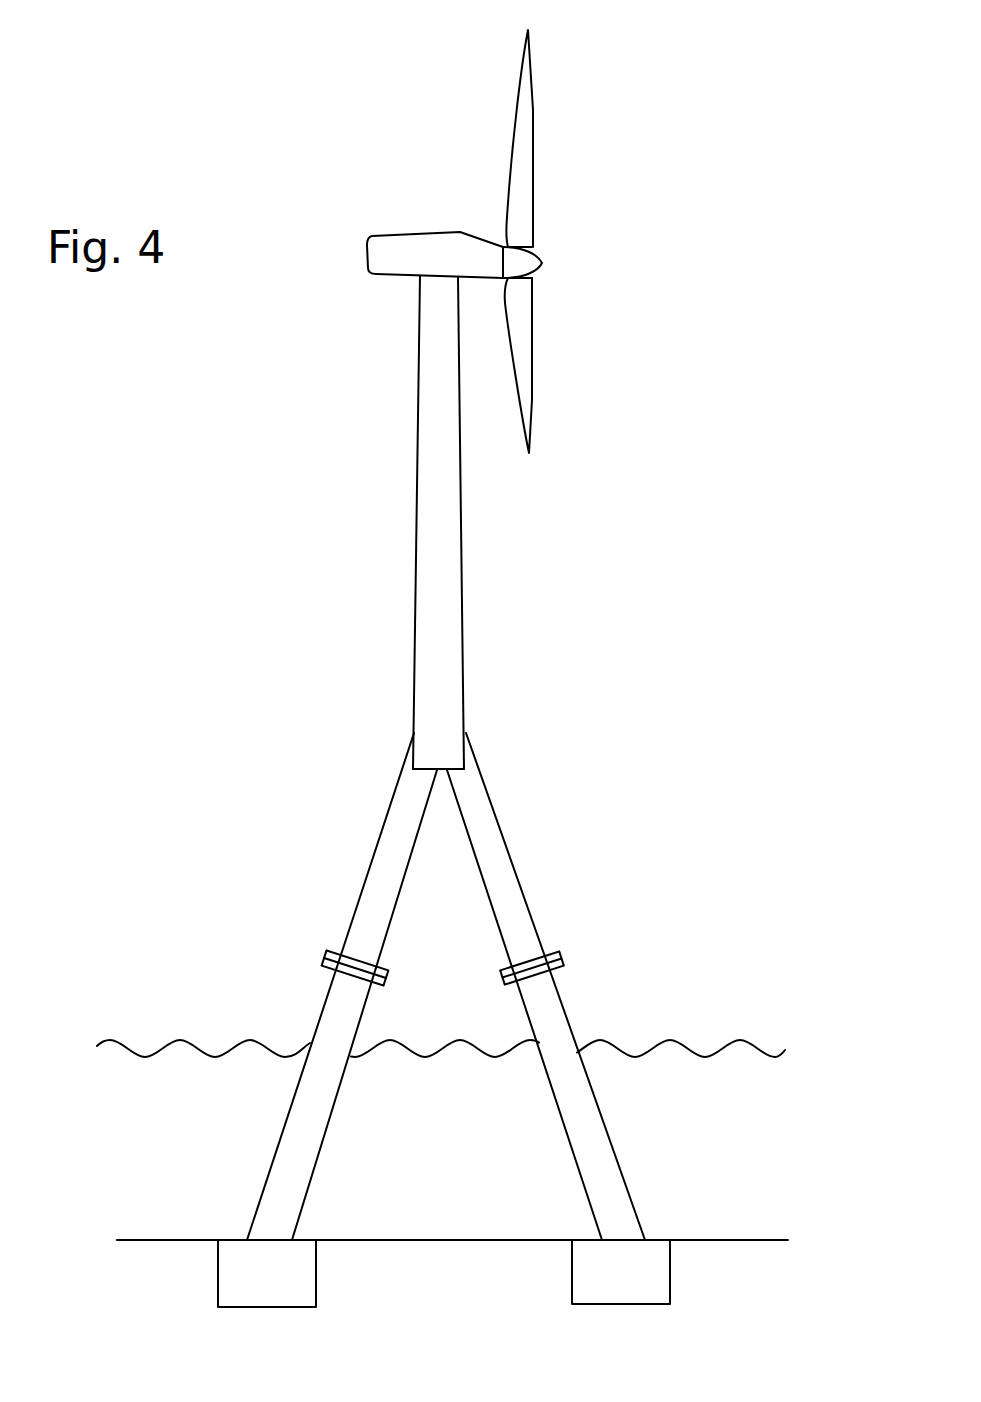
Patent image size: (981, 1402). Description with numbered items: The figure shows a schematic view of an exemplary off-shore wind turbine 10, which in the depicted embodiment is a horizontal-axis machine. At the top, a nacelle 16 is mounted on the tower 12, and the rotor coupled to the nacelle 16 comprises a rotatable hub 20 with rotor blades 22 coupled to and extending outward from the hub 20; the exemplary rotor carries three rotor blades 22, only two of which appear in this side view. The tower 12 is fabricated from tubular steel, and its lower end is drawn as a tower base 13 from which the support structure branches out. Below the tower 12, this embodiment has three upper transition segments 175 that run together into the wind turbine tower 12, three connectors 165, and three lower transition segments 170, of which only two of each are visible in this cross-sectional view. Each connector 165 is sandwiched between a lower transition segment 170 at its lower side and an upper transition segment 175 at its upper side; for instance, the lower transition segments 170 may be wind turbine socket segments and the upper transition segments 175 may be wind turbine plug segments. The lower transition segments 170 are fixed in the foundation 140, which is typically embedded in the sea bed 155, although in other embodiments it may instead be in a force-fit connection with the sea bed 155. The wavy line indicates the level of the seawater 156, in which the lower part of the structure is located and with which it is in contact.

The wind turbine 10 is at (256, 72).
The tower 12 is at (415, 608).
The tower base section 13 is at (453, 706).
The nacelle 16 is at (367, 258).
The hub 20 is at (547, 263).
The rotor blade 22 is at (535, 132).
The foundation 140 is at (286, 1286).
The sea bed 155 is at (466, 1298).
The seawater 156 is at (779, 1200).
The connector 165 is at (325, 957).
The lower transition segment 170 is at (290, 1107).
The upper transition segment 175 is at (382, 837).